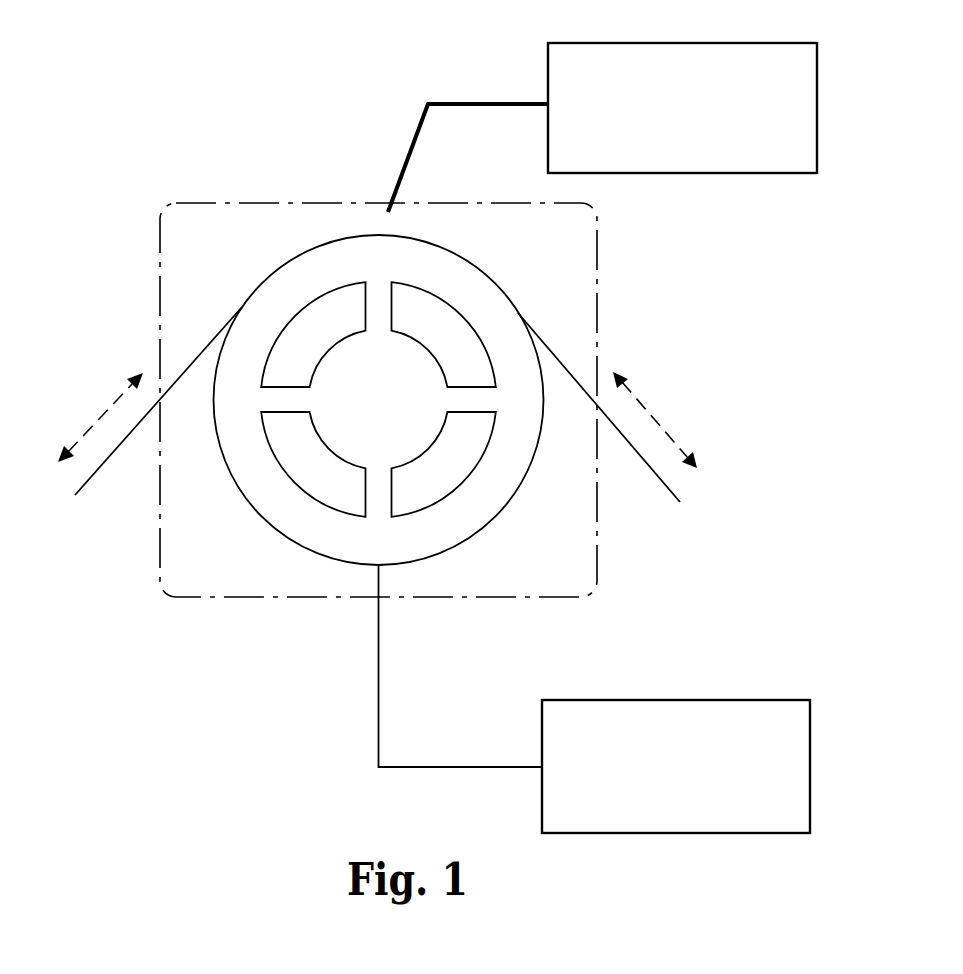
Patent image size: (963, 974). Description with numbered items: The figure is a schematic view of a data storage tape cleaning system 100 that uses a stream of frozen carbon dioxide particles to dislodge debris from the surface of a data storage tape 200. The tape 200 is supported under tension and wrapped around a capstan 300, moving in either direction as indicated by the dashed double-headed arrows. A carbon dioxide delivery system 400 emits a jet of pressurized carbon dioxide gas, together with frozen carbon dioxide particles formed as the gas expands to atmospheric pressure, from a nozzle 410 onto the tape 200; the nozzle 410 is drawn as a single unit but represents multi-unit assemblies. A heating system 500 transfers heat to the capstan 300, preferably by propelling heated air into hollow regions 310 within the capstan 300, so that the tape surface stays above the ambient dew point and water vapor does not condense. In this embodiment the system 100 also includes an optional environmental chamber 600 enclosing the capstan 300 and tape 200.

The data storage tape cleaning system 100 is at (212, 76).
The data storage tape 200 is at (198, 353).
The capstan 300 is at (243, 497).
The hollow regions 310 is at (325, 479).
The carbon dioxide delivery system 400 is at (745, 173).
The nozzle 410 is at (413, 138).
The heating system 500 is at (655, 700).
The environmental chamber 600 is at (205, 597).